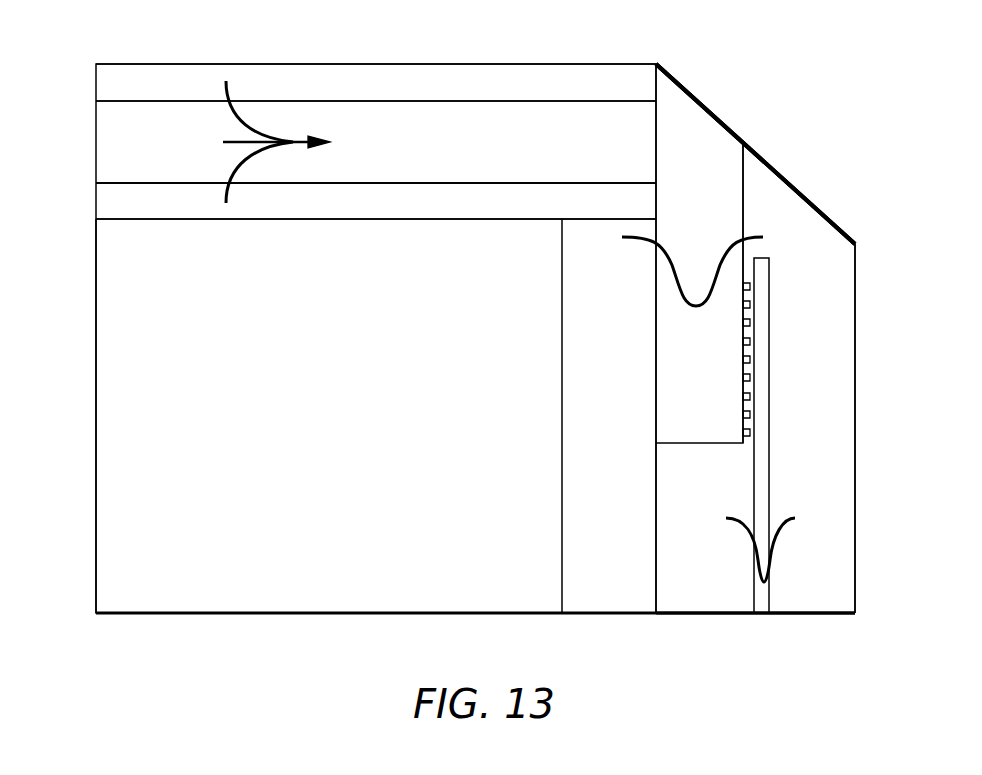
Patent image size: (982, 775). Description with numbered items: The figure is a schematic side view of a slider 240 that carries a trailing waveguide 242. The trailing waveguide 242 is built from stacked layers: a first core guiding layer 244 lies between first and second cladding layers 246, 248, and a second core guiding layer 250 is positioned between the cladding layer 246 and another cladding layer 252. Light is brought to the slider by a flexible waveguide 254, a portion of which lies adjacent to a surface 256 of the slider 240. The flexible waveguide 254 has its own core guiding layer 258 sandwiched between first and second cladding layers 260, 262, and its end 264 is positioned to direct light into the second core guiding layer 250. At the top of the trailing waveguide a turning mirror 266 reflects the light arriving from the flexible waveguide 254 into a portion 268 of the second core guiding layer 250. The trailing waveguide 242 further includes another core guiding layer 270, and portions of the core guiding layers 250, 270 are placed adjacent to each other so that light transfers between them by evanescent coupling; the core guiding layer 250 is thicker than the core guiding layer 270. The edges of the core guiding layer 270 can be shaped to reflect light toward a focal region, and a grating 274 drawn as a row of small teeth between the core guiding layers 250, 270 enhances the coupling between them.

The slider 240 is at (128, 663).
The trailing waveguide 242 is at (855, 630).
The first core guiding layer 244 is at (762, 493).
The first cladding layer 246 is at (830, 570).
The second cladding layer 248 is at (670, 562).
The second core guiding layer 250 is at (677, 358).
The another cladding layer 252 is at (582, 460).
The flexible waveguide 254 is at (96, 64).
The surface of the slider 256 is at (137, 222).
The core guiding layer 258 is at (182, 118).
The first cladding layer 260 is at (117, 80).
The second cladding layer 262 is at (178, 203).
The end of the flexible waveguide 264 is at (656, 133).
The turning mirror 266 is at (785, 177).
The portion of the second core guiding layer 268 is at (707, 109).
The another core guiding layer 270 is at (762, 377).
The grating 274 is at (747, 325).